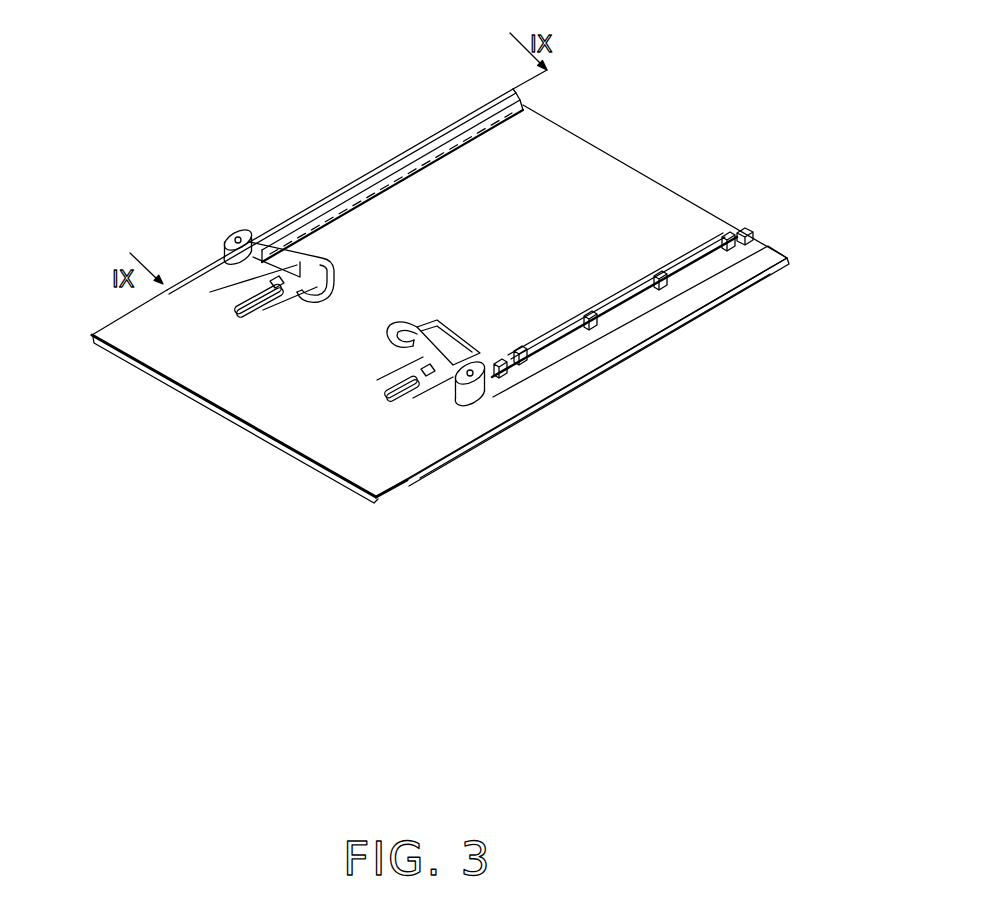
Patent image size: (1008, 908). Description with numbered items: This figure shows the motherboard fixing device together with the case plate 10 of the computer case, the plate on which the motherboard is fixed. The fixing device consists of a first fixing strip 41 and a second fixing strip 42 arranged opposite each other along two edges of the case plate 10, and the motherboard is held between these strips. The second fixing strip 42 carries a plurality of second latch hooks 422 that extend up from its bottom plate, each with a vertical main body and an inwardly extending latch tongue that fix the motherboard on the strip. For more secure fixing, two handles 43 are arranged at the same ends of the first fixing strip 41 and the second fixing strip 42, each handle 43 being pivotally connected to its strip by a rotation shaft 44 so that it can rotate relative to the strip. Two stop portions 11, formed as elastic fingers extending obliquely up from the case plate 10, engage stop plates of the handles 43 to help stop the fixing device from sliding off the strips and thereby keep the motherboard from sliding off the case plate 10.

The case plate 10 is at (610, 183).
The stop portion 11 is at (240, 297).
The first fixing strip 41 is at (381, 162).
The second fixing strip 42 is at (743, 229).
The second latch hook 422 is at (670, 287).
The handle 43 is at (292, 240).
The rotation shaft 44 is at (237, 233).